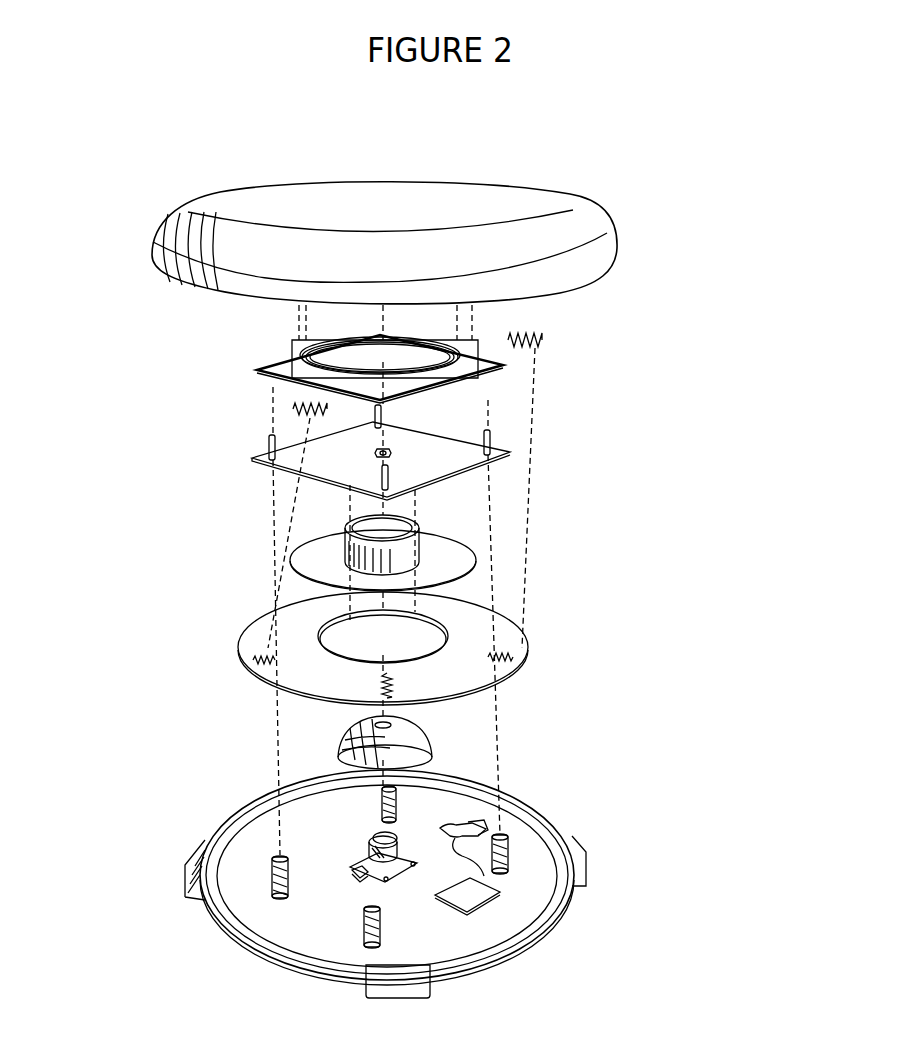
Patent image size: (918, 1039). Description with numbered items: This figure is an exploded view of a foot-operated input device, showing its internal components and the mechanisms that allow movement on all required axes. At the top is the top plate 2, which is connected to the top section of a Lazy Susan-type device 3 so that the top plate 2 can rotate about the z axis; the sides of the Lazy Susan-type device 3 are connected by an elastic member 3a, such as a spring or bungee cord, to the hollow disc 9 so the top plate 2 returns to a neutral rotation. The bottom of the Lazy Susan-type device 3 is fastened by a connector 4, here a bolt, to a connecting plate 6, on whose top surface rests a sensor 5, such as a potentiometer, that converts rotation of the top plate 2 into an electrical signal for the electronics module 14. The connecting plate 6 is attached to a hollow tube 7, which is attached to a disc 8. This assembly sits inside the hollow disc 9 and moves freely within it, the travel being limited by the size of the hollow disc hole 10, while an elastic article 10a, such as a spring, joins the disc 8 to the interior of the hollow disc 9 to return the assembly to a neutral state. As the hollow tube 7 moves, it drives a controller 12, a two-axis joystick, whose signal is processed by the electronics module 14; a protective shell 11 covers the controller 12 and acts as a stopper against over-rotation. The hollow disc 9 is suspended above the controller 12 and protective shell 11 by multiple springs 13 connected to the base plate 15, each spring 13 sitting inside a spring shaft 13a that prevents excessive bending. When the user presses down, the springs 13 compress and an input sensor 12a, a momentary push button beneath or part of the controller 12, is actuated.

The top plate 2 is at (567, 229).
The Lazy Susan-type device 3 is at (500, 367).
The elastic member 3a is at (285, 403).
The connector 4 is at (503, 438).
The sensor 5 is at (403, 455).
The connecting plate 6 is at (433, 483).
The hollow tube 7 is at (338, 532).
The disc 8 is at (300, 562).
The hollow disc 9 is at (258, 633).
The hollow disc hole 10 is at (320, 638).
The elastic article 10a is at (398, 685).
The protective shell 11 is at (350, 732).
The controller 12 is at (358, 842).
The input sensor 12a is at (358, 872).
The springs 13 is at (262, 865).
The spring shaft 13a is at (508, 855).
The electronics module 14 is at (505, 885).
The base plate 15 is at (490, 930).